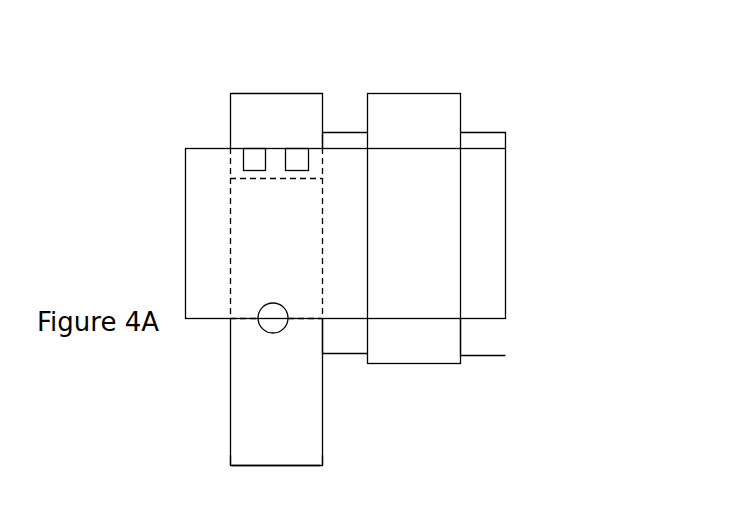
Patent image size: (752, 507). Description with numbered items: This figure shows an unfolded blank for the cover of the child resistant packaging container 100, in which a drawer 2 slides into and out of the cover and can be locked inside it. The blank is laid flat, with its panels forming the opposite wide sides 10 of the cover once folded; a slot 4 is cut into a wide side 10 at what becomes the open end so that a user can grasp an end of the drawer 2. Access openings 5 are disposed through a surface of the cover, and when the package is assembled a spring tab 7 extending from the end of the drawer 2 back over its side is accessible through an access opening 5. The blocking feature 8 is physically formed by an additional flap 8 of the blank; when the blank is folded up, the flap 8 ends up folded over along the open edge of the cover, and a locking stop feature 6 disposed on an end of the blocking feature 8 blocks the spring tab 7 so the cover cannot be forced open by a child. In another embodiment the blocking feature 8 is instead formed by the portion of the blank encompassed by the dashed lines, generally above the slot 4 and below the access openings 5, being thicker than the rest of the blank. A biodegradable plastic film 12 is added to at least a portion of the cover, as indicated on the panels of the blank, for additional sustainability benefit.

The child resistant packaging container 100 is at (404, 271).
The drawer 2 is at (278, 267).
The slot 4 is at (278, 324).
The access opening 5 is at (254, 150).
The locking stop feature 6 is at (257, 465).
The spring tab 7 is at (275, 506).
The blocking feature 8 is at (257, 383).
The wide side 10 is at (250, 216).
The biodegradable plastic film 12 is at (337, 217).